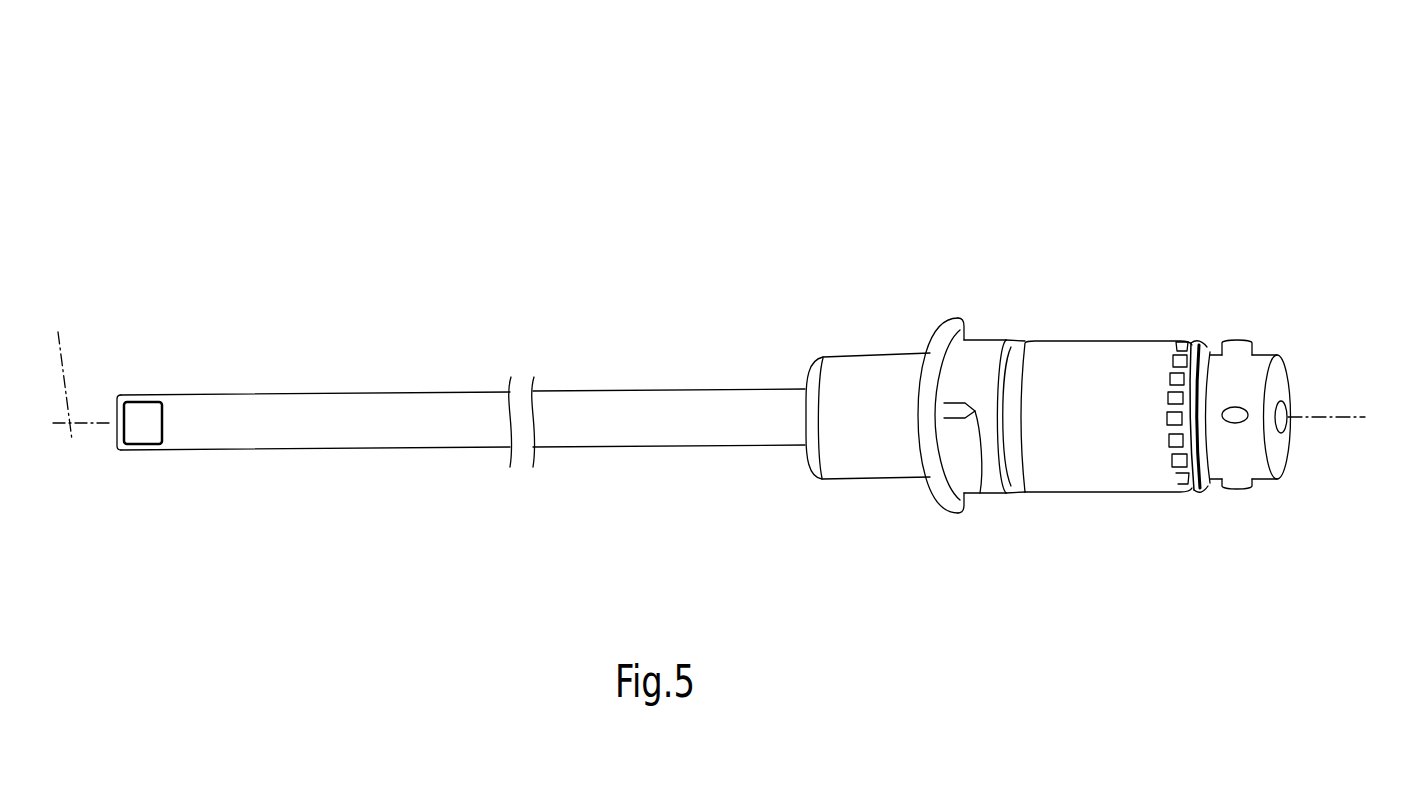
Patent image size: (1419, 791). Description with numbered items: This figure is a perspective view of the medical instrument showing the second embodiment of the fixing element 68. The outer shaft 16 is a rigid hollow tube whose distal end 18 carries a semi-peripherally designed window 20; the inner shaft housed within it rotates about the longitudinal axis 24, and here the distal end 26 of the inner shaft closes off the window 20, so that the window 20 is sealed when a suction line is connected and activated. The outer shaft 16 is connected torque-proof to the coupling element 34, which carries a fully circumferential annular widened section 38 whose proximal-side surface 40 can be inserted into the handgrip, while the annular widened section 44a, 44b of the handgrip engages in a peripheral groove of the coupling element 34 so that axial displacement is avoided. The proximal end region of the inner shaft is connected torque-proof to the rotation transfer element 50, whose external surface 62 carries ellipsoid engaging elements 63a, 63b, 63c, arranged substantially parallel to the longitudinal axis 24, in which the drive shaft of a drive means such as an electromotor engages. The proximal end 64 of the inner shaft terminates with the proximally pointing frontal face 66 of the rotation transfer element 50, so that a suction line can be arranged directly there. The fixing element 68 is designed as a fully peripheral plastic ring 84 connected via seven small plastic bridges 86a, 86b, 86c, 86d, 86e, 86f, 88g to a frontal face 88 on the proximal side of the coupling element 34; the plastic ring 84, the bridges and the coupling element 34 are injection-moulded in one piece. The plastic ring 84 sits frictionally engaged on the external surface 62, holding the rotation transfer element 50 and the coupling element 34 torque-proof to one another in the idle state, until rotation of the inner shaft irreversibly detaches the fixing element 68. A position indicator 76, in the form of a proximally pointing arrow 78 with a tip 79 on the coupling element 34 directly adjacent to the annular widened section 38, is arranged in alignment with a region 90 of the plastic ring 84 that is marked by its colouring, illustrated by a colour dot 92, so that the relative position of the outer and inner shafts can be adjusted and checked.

The outer shaft 16 is at (572, 423).
The distal end 18 is at (205, 418).
The window 20 is at (137, 412).
The longitudinal axis 24 is at (709, 371).
The distal end 26 is at (147, 432).
The coupling element 34 is at (842, 317).
The annular widened section 38 is at (943, 330).
The surface 40 is at (967, 332).
The annular widened section 44a is at (1025, 341).
The annular widened section 44b is at (1025, 493).
The rotation transfer element 50 is at (1283, 300).
The external surface 62 is at (1261, 474).
The engaging element 63a is at (1230, 341).
The engaging element 63b is at (1244, 419).
The engaging element 63c is at (1260, 486).
The proximal end 64 is at (1285, 407).
The frontal face 66 is at (1280, 455).
The fixing element 68 is at (1177, 345).
The position indicator 76 is at (952, 426).
The arrow 78 is at (960, 432).
The tip 79 is at (980, 493).
The plastic ring 84 is at (1200, 340).
The plastic bridge 86a is at (1190, 341).
The plastic bridge 86b is at (1175, 360).
The plastic bridge 86c is at (1170, 382).
The plastic bridge 86d is at (1170, 400).
The plastic bridge 86e is at (1172, 430).
The plastic bridge 86f is at (1172, 452).
The frontal face 88 is at (1183, 490).
The plastic bridge 88g is at (1160, 492).
The region 90 is at (1197, 422).
The colour dot 92 is at (1196, 486).